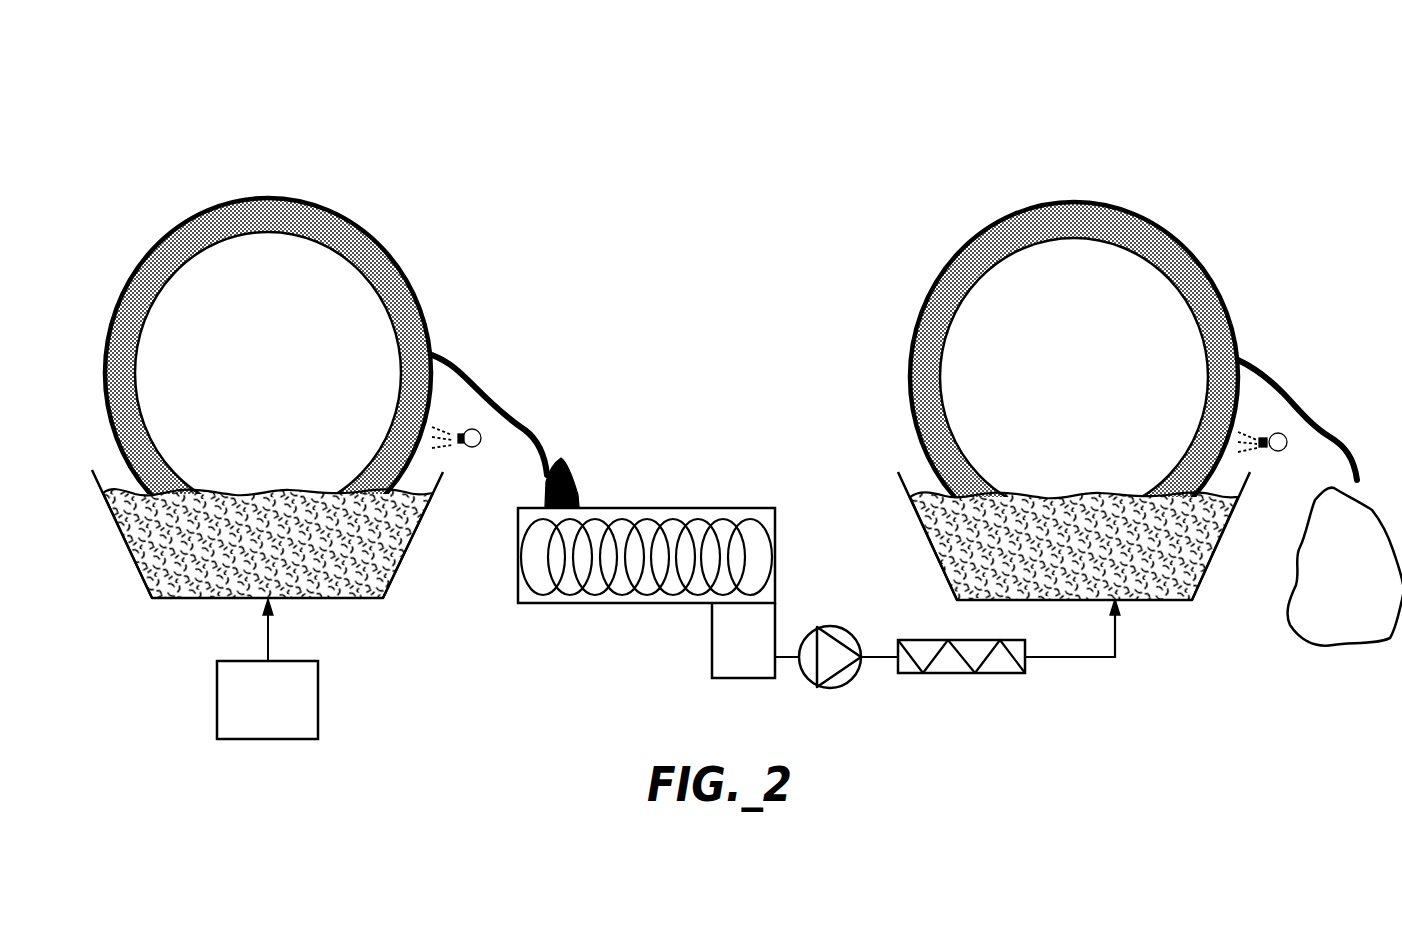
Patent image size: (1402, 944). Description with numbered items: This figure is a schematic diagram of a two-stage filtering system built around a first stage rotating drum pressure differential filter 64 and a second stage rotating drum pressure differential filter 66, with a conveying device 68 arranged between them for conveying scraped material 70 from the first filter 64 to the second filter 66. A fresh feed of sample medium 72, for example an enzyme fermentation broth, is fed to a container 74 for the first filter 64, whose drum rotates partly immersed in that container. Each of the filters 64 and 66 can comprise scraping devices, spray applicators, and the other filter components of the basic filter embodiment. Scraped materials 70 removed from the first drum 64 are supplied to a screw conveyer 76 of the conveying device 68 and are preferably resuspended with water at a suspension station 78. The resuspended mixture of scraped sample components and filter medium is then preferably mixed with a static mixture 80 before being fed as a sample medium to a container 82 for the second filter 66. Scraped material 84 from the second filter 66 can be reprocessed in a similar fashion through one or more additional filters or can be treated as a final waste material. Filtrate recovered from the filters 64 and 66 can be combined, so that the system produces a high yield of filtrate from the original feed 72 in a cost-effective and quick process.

The first stage rotating drum pressure differential filter 64 is at (261, 180).
The second stage rotating drum pressure differential filter 66 is at (1052, 178).
The conveying device 68 is at (636, 557).
The scraped material 70 is at (563, 458).
The fresh feed of sample medium 72 is at (267, 669).
The container 74 is at (320, 598).
The screw conveyer 76 is at (558, 604).
The suspension station 78 is at (711, 640).
The static mixture 80 is at (943, 675).
The container 82 is at (1146, 600).
The scraped material 84 is at (1345, 567).